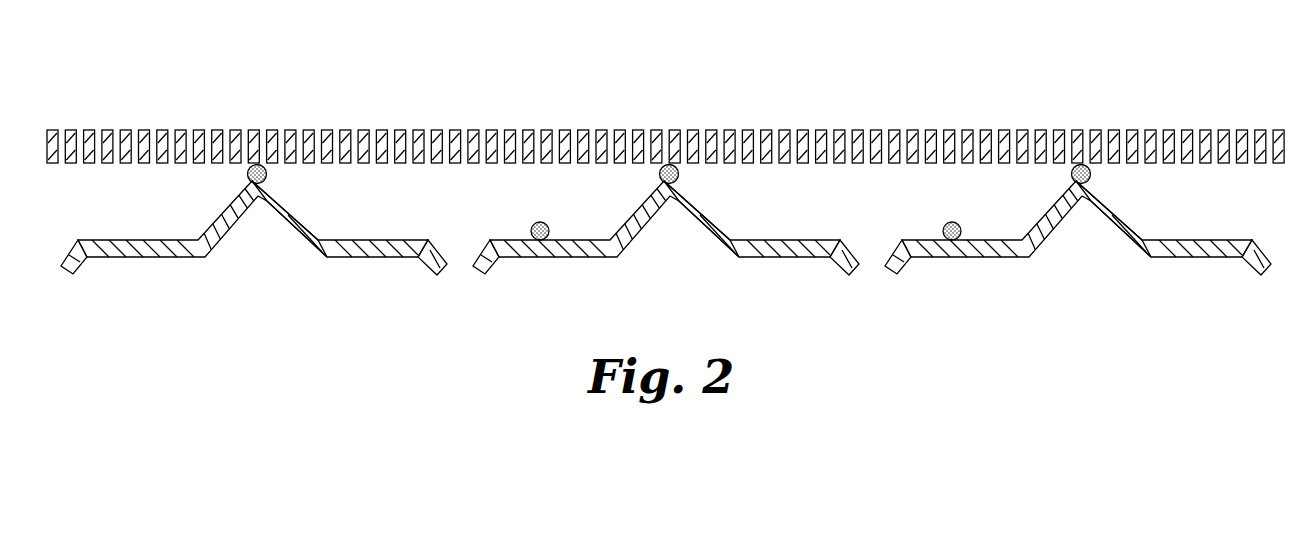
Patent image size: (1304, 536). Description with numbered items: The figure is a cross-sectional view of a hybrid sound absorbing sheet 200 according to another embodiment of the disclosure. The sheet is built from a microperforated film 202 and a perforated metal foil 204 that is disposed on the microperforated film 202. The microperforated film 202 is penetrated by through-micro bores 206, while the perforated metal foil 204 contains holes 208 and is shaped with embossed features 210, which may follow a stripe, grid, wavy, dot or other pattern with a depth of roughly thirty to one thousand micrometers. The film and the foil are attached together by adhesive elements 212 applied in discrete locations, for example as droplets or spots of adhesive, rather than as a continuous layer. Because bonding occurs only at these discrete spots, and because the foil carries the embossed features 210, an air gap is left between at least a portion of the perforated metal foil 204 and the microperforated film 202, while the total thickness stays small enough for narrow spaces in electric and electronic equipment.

The hybrid sound absorbing sheet 200 is at (1195, 76).
The microperforated film 202 is at (871, 133).
The perforated metal foil 204 is at (1005, 257).
The through-micro bores 206 is at (694, 133).
The holes 208 is at (463, 258).
The embossed features 210 is at (268, 202).
The adhesive elements 212 is at (248, 176).